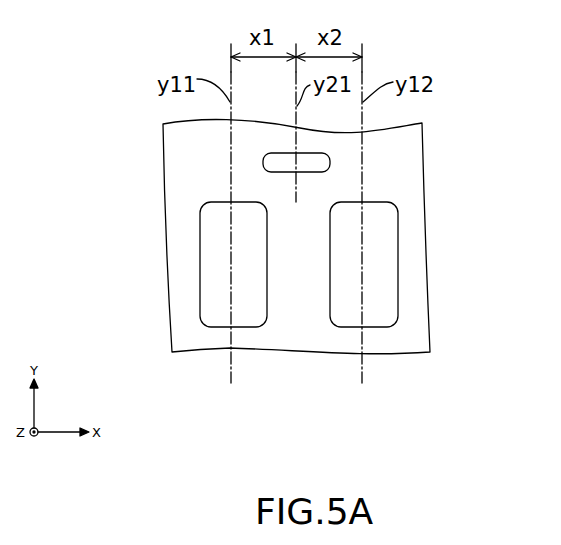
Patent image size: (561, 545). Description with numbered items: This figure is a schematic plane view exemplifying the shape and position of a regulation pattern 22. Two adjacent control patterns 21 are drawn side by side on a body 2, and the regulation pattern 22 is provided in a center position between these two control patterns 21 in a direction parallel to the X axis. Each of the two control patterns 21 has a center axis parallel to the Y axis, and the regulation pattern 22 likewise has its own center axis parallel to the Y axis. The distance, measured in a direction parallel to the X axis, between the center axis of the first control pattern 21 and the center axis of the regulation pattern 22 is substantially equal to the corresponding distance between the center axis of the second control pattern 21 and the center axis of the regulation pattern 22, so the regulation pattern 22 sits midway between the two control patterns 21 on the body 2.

The substrate 2 is at (413, 342).
The control pattern 21 is at (207, 266).
The regulation pattern 22 is at (313, 163).